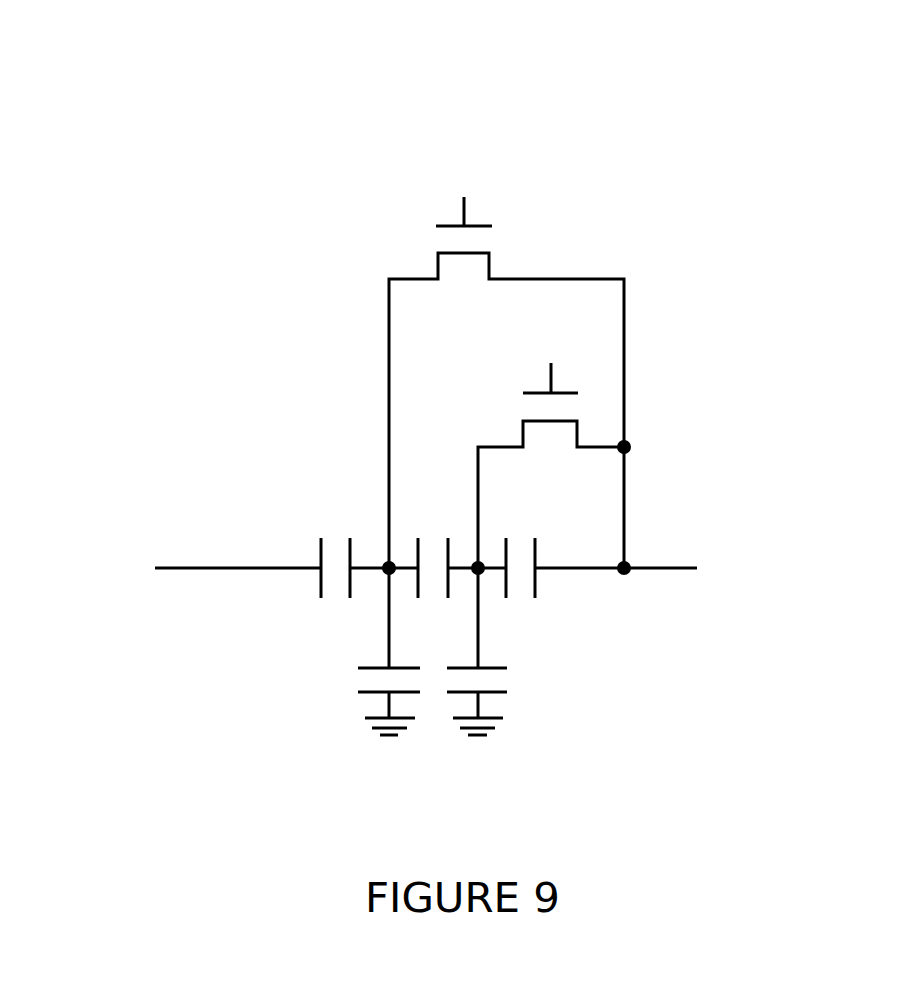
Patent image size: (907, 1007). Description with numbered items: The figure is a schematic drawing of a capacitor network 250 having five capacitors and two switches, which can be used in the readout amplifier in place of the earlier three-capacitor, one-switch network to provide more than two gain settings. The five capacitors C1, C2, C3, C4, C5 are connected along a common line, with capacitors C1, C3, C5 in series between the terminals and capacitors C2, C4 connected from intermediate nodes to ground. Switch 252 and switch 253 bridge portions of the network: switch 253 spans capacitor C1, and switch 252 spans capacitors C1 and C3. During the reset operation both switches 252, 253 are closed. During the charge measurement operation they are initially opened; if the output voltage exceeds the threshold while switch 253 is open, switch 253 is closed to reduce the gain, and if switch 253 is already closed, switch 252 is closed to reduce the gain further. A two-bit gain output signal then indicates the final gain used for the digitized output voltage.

The capacitor network 250 is at (742, 133).
The switch 252 is at (436, 261).
The switch 253 is at (522, 426).
The capacitor C1 is at (538, 558).
The capacitor C2 is at (465, 666).
The capacitor C3 is at (420, 542).
The capacitor C4 is at (377, 666).
The capacitor C5 is at (322, 541).